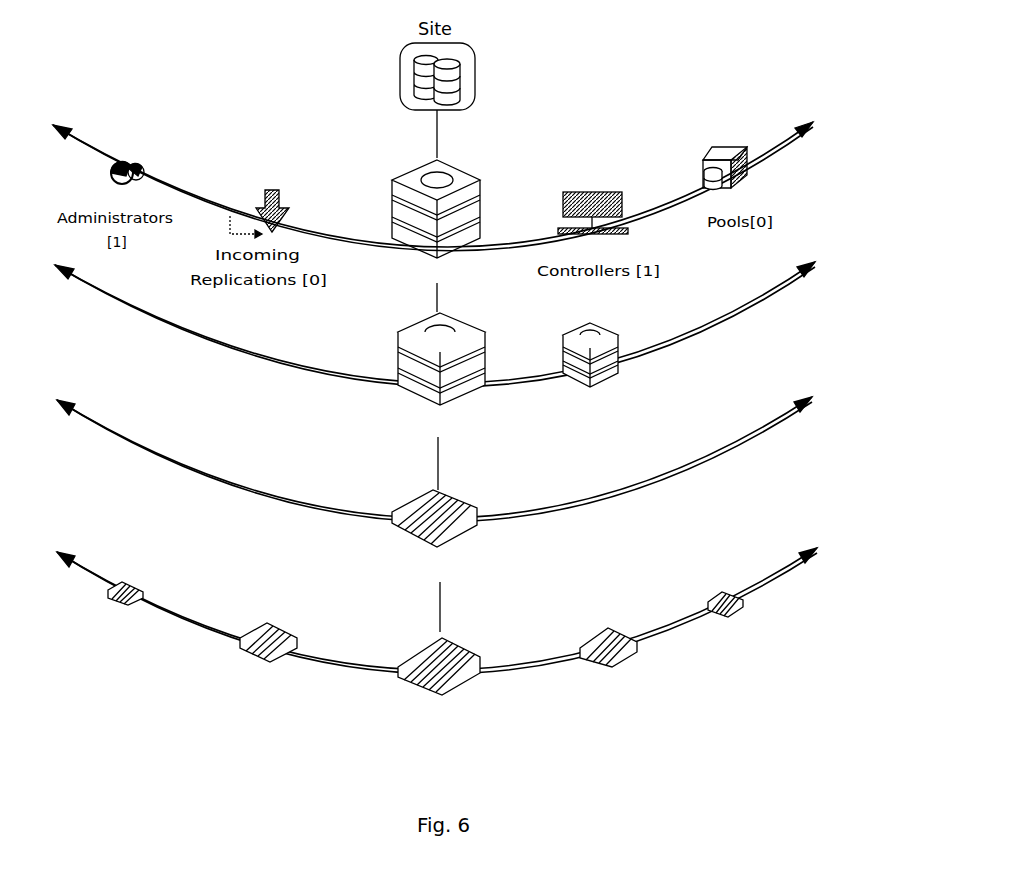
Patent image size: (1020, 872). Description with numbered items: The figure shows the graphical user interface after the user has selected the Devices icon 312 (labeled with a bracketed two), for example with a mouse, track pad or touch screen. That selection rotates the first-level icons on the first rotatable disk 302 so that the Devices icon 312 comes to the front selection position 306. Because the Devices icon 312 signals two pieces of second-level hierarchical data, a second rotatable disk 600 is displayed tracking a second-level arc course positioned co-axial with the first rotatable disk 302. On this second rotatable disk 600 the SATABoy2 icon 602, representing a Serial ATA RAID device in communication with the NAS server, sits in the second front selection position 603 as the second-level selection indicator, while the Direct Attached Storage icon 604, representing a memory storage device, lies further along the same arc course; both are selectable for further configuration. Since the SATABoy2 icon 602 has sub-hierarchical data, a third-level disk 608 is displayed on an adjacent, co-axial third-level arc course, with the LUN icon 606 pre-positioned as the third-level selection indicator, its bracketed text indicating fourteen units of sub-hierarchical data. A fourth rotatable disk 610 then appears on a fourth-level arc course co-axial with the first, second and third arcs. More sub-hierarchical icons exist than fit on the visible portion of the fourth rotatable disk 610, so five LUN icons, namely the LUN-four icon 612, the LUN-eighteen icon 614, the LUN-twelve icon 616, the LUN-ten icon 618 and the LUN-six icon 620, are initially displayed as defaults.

The first rotatable disk 302 is at (778, 152).
The front selection position 306 is at (481, 231).
The Devices[2] icon 312 is at (458, 170).
The second rotatable disk 600 is at (780, 288).
The SATABoy2 icon 602 is at (460, 335).
The second front selection position 603 is at (491, 366).
The Direct Attached Storage icon 604 is at (603, 330).
The LUN[14] icon 606 is at (457, 502).
The third-level disk 608 is at (757, 438).
The fourth rotatable disk 610 is at (770, 582).
The LUN[4] icon 612 is at (127, 582).
The LUN[18] icon 614 is at (273, 623).
The LUN[12] icon 616 is at (458, 642).
The LUN[10] icon 618 is at (612, 628).
The LUN[06] icon 620 is at (723, 590).